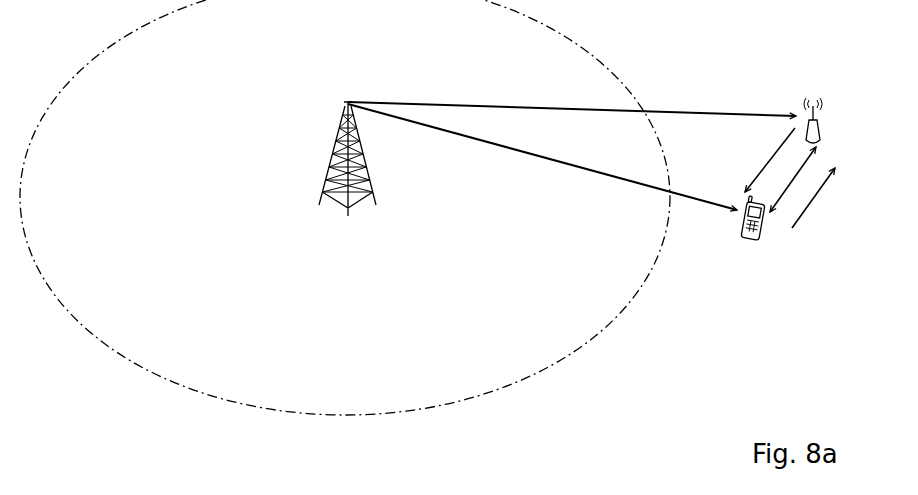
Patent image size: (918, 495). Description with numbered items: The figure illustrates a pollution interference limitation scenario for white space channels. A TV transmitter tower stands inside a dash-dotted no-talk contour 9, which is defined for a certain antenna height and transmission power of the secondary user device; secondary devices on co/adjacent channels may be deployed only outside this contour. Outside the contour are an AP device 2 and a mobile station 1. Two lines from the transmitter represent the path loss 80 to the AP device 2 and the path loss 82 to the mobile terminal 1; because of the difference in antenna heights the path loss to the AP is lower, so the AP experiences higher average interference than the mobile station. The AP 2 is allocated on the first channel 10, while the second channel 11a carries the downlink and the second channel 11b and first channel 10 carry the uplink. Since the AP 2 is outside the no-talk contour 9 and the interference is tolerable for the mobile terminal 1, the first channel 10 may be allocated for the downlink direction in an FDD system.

The mobile station 1 is at (758, 236).
The AP device 2 is at (812, 123).
The no-talk contour 9 is at (548, 370).
The first channel 10 is at (758, 172).
The second channel 11a is at (808, 160).
The second channel 11b is at (803, 213).
The path loss to the AP 80 is at (558, 107).
The path loss to the mobile terminal 82 is at (508, 148).